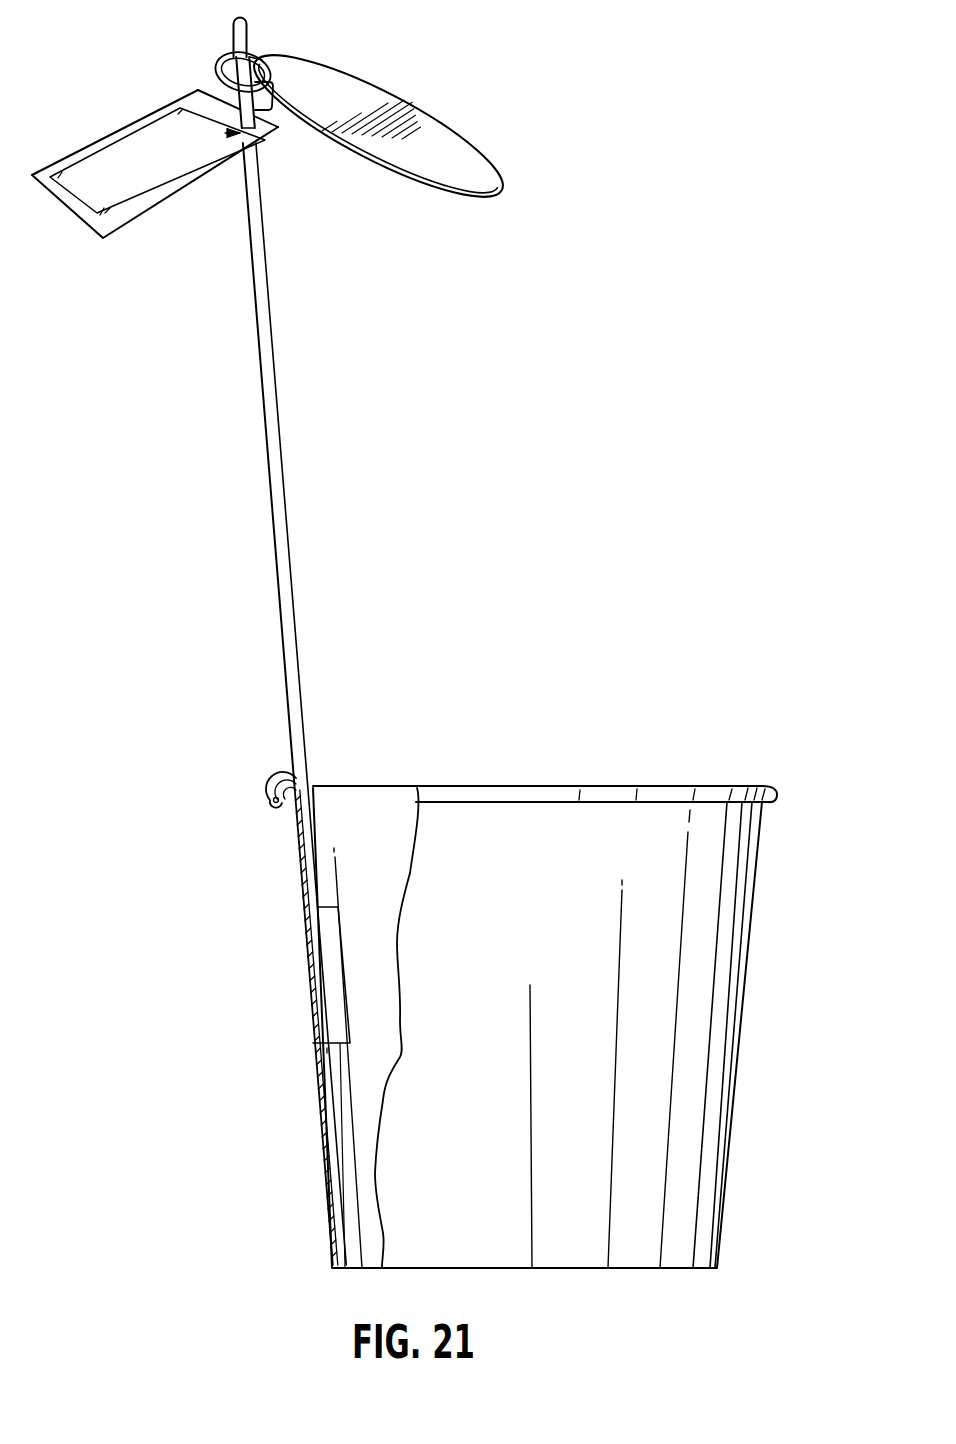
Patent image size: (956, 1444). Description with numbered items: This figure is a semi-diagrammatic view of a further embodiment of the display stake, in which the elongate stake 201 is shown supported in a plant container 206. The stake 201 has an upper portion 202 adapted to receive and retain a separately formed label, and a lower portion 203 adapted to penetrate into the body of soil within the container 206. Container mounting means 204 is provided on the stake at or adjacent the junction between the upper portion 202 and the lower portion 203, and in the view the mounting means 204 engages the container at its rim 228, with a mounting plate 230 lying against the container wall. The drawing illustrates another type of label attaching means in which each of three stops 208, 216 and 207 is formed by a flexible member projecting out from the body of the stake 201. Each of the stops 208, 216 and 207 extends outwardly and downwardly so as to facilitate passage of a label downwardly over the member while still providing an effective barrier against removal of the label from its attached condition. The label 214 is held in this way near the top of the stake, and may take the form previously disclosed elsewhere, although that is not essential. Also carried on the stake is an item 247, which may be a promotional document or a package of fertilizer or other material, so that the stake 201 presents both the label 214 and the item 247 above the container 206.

The stake 201 is at (233, 558).
The upper portion 202 is at (282, 635).
The lower portion 203 is at (313, 848).
The container mounting means 204 is at (275, 778).
The plant container 206 is at (695, 1018).
The stop 207 is at (272, 153).
The stop 208 is at (250, 53).
The label 214 is at (410, 137).
The stop 216 is at (278, 116).
The container rim 228 is at (762, 803).
The mounting plate 230 is at (332, 997).
The item 247 is at (121, 215).